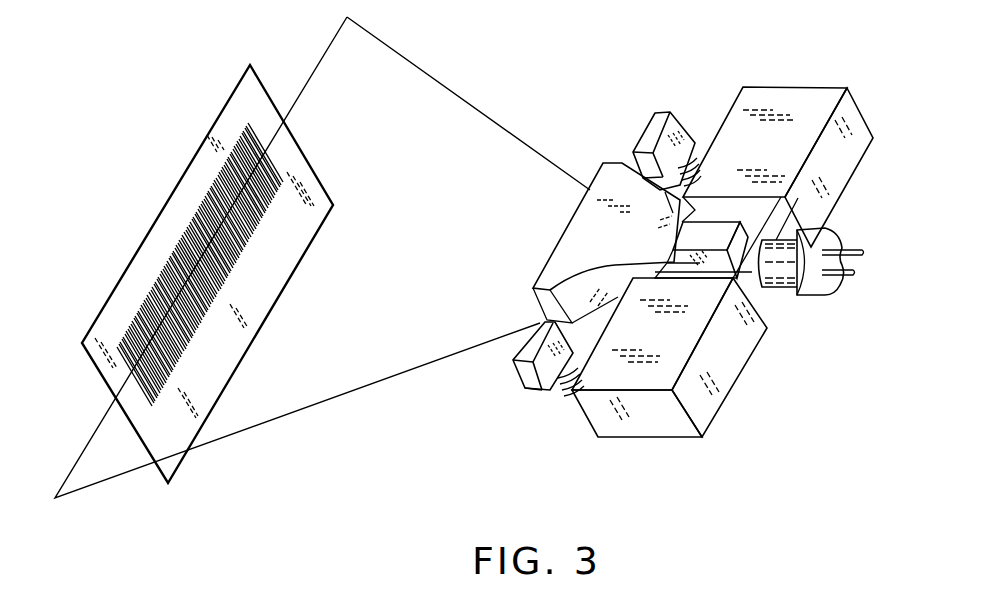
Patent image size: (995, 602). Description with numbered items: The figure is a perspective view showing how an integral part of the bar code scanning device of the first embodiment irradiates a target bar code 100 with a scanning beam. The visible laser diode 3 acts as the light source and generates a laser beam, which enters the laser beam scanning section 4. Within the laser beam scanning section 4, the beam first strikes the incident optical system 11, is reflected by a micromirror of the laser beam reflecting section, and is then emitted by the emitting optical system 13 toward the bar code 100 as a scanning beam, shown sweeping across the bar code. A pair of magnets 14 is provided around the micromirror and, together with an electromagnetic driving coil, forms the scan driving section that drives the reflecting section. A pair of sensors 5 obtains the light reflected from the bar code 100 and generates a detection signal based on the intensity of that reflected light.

The target bar code 100 is at (200, 203).
The laser beam scanning section 4 is at (761, 384).
The emitting optical system 13 is at (610, 180).
The sensors 5 is at (666, 112).
The magnets 14 is at (812, 100).
The incident optical system 11 is at (712, 260).
The laser diode 3 is at (778, 270).